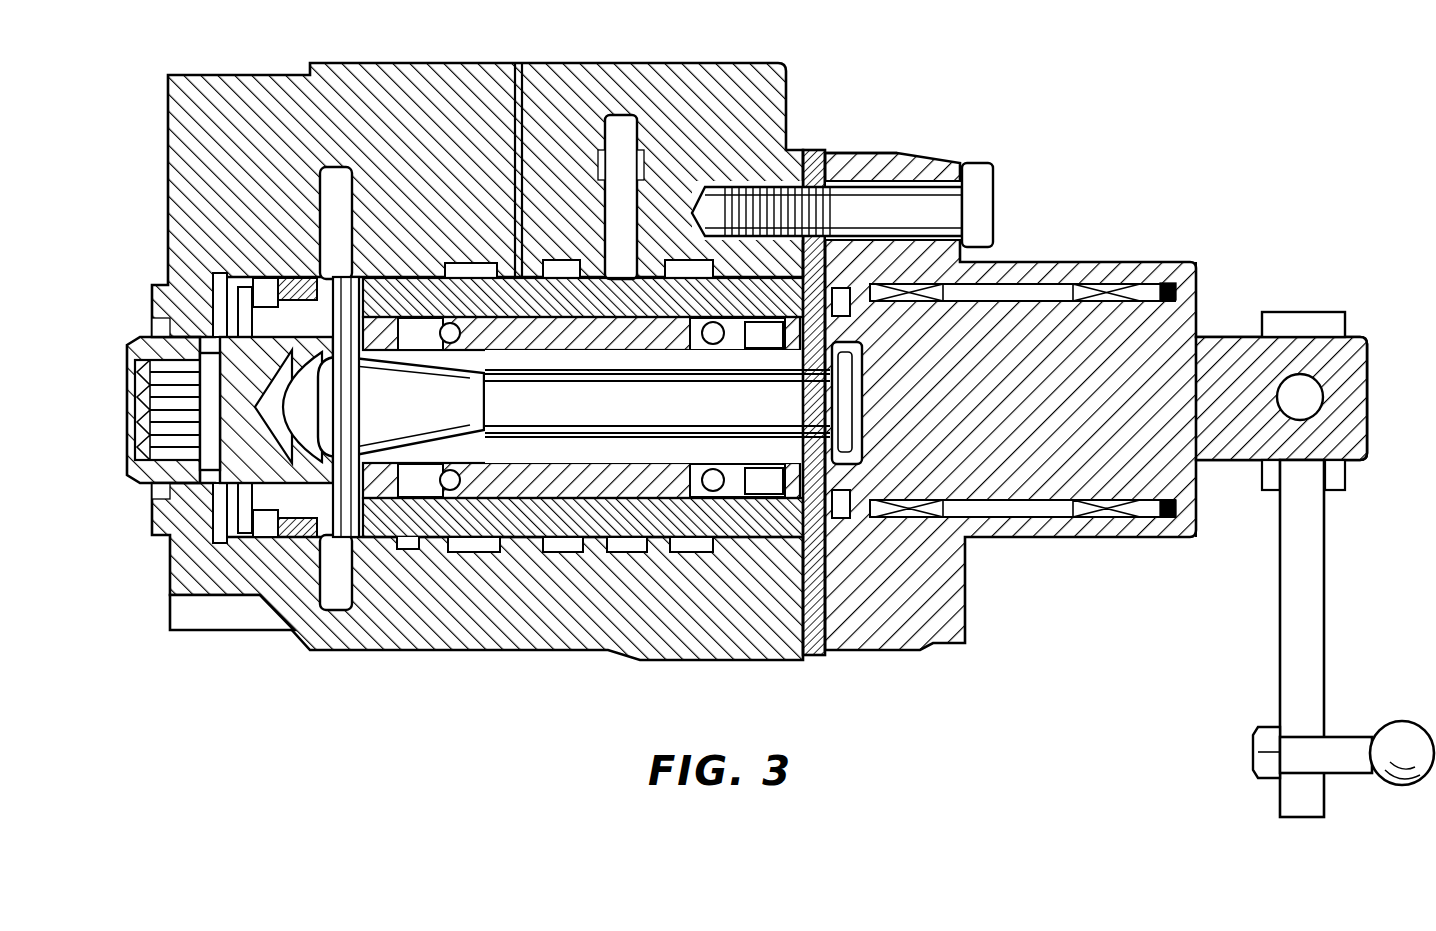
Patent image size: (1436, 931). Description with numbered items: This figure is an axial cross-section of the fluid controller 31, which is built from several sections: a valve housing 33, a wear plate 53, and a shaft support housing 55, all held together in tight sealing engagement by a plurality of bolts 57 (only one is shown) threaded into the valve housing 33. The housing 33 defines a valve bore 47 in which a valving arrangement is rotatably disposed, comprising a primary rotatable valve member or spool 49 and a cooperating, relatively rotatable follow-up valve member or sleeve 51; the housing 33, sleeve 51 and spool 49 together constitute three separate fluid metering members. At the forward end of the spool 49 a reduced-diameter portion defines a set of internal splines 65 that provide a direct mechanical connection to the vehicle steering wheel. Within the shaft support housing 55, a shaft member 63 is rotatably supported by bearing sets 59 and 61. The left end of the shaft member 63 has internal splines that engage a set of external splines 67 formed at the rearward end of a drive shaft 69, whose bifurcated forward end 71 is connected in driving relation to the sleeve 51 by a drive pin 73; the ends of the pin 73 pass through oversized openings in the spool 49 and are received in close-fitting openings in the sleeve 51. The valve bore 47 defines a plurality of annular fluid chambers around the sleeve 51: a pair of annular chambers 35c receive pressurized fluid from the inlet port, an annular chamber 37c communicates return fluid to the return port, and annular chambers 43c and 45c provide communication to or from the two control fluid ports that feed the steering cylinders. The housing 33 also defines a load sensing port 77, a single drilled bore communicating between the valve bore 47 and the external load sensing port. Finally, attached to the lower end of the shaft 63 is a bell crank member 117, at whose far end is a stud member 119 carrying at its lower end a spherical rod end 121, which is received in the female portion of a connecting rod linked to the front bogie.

The fluid controller 31 is at (912, 145).
The housing 33 is at (255, 95).
The annular chambers 35c is at (590, 546).
The annular chamber 37c is at (335, 266).
The annular chamber 43c is at (698, 546).
The annular chamber 45c is at (486, 546).
The valve bore 47 is at (410, 538).
The primary, rotatable valve member (spool) 49 is at (590, 330).
The follow-up valve member (sleeve) 51 is at (778, 520).
The wear plate 53 is at (812, 150).
The shaft support housing 55 is at (895, 650).
The bolts 57 is at (995, 186).
The bearing set 59 is at (905, 500).
The bearing set 61 is at (1112, 306).
The shaft member 63 is at (1242, 352).
The internal splines 65 is at (132, 368).
The external splines 67 is at (835, 382).
The drive shaft 69 is at (657, 406).
The bifurcated forward end 71 is at (352, 410).
The drive pin 73 is at (372, 292).
The load sensing port 77 is at (520, 182).
The bell crank member 117 is at (1282, 626).
The stud member 119 is at (1342, 738).
The spherical rod end 121 is at (1385, 770).